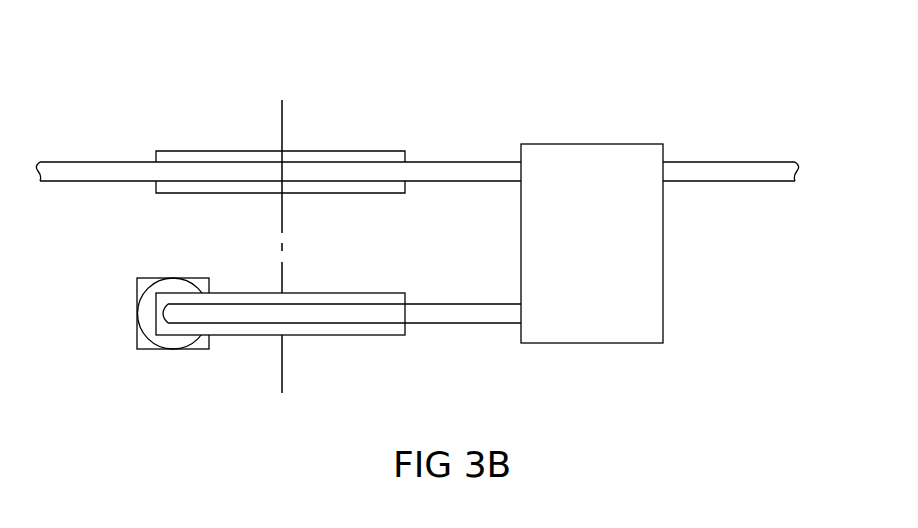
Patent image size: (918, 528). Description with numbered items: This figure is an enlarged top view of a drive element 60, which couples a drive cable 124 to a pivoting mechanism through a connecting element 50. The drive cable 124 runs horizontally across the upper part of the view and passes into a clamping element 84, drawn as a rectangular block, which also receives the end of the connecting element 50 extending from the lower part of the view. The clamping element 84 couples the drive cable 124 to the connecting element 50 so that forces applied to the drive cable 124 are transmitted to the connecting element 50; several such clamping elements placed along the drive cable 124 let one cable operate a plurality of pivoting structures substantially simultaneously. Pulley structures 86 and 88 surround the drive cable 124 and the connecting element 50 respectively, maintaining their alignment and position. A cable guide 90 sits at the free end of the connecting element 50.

The rod 50 is at (458, 315).
The assembly 60 is at (419, 229).
The housing block 84 is at (592, 155).
The upper sleeve 86 is at (186, 152).
The lower sleeve 88 is at (249, 336).
The end fitting 90 is at (147, 280).
The upper rod 124 is at (732, 168).